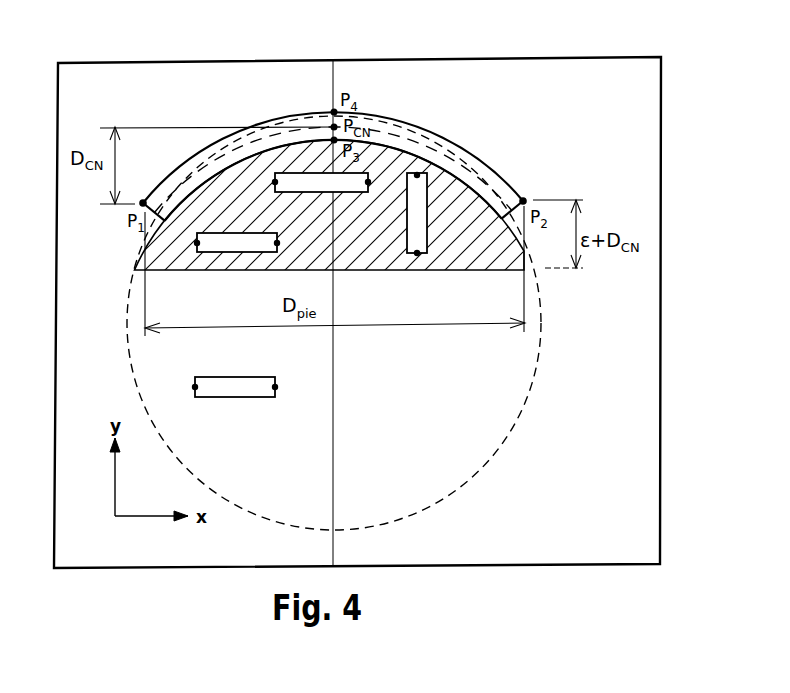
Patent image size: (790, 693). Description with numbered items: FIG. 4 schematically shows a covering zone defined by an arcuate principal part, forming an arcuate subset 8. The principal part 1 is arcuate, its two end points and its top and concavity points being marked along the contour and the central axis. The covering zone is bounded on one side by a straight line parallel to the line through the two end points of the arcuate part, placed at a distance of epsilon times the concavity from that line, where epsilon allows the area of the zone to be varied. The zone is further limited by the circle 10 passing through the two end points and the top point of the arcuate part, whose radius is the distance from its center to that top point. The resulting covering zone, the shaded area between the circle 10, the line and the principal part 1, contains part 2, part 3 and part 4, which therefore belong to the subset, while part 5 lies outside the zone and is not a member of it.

The arcuate subset 8 is at (344, 166).
The circle 10 is at (496, 457).
The principal part 1 is at (333, 170).
The part no. 2 is at (325, 177).
The part no. 3 is at (243, 242).
The part no. 4 is at (409, 204).
The part no. 5 is at (238, 388).